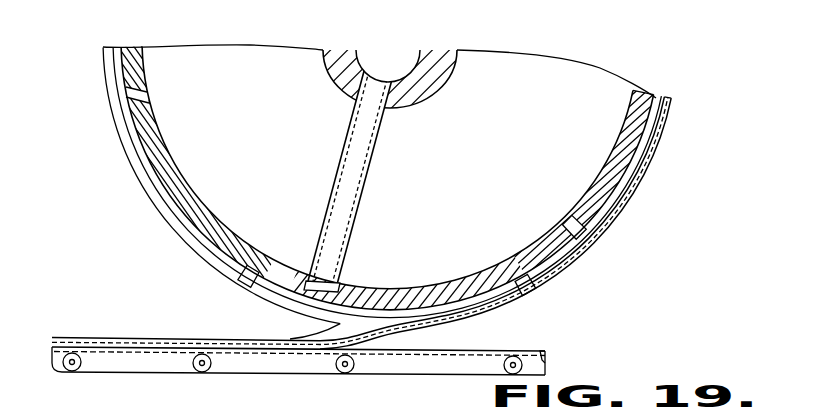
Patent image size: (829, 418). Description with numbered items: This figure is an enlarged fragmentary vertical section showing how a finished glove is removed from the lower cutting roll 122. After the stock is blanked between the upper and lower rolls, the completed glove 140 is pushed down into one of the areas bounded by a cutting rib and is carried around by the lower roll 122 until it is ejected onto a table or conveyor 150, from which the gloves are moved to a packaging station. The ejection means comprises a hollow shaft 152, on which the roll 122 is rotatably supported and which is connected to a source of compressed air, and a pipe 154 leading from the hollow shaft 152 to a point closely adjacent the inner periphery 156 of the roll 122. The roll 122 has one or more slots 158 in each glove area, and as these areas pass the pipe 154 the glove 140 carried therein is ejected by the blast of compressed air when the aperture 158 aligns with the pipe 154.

The lower cutting roll 122 is at (641, 95).
The completed glove 140 is at (627, 214).
The conveyor 150 is at (181, 375).
The hollow shaft 152 is at (441, 88).
The pipe 154 is at (365, 185).
The inner periphery 156 is at (433, 287).
The slot 158 is at (317, 303).